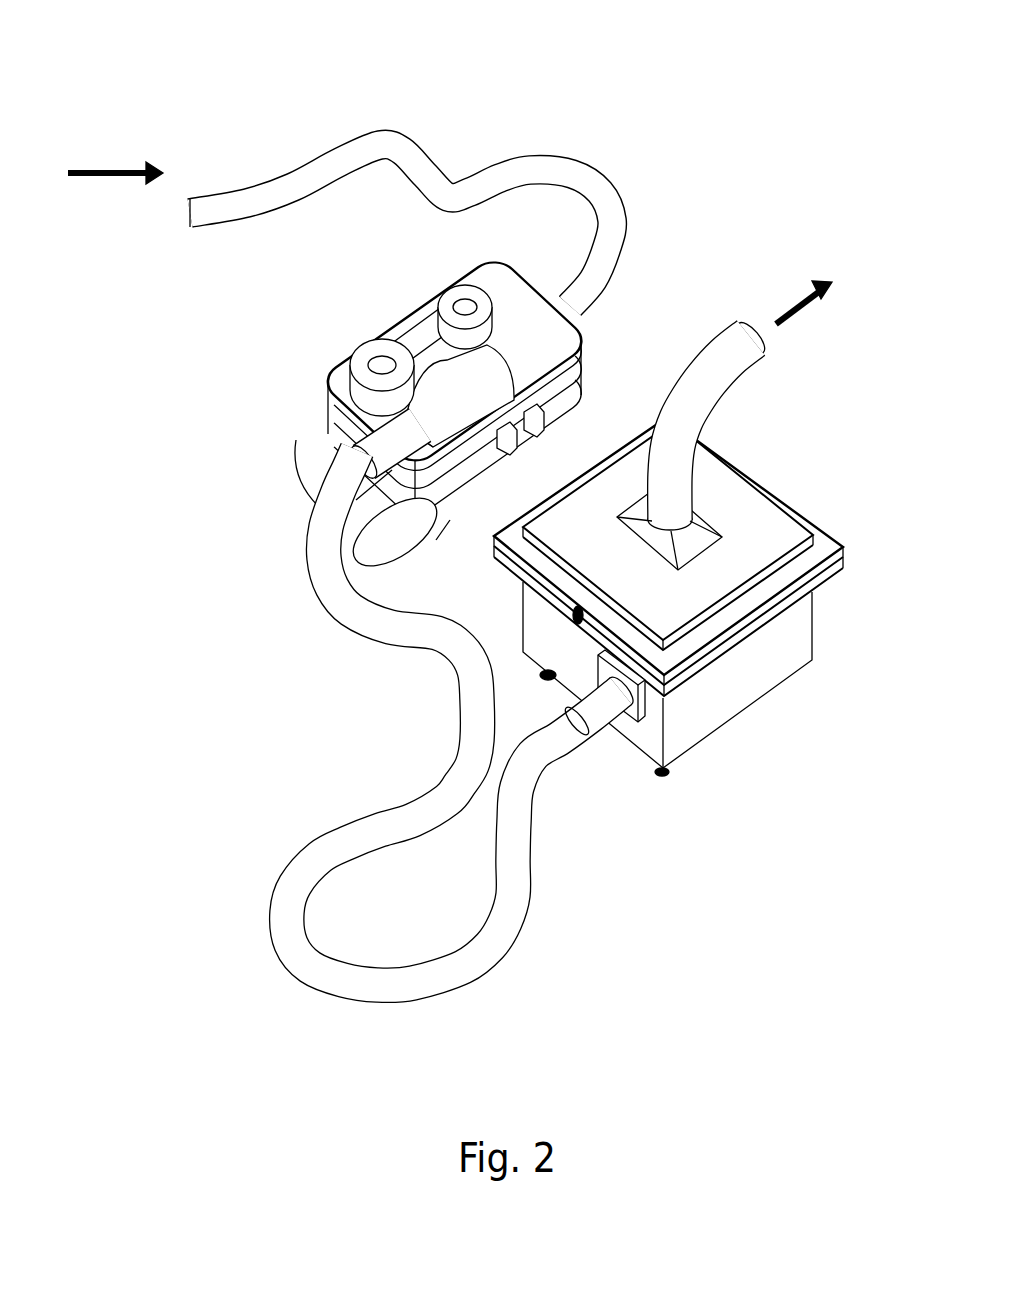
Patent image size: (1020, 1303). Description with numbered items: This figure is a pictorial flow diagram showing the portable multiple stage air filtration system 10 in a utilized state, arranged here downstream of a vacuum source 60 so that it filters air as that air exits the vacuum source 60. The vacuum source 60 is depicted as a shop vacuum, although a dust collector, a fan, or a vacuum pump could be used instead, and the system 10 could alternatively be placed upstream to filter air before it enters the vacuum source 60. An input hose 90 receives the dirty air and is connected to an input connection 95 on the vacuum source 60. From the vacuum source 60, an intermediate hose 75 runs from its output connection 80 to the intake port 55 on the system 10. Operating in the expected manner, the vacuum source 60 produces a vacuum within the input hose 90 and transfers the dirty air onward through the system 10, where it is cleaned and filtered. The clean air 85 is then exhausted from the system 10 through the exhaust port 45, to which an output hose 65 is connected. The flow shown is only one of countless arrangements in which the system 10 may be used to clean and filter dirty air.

The portable multiple stage air filtration system 10 is at (690, 583).
The exhaust port 45 is at (700, 525).
The intake port 55 is at (602, 688).
The vacuum source 60 is at (463, 365).
The output hose 65 is at (736, 342).
The intermediate hose 75 is at (330, 592).
The output connection 80 is at (362, 458).
The clean air "c" 85 is at (115, 177).
The input hose 90 is at (293, 166).
The input connection 95 is at (580, 320).